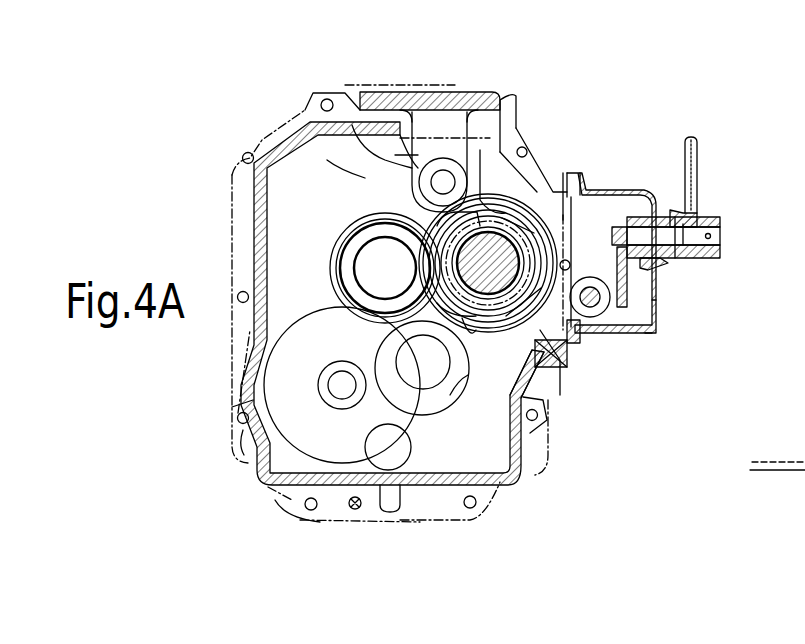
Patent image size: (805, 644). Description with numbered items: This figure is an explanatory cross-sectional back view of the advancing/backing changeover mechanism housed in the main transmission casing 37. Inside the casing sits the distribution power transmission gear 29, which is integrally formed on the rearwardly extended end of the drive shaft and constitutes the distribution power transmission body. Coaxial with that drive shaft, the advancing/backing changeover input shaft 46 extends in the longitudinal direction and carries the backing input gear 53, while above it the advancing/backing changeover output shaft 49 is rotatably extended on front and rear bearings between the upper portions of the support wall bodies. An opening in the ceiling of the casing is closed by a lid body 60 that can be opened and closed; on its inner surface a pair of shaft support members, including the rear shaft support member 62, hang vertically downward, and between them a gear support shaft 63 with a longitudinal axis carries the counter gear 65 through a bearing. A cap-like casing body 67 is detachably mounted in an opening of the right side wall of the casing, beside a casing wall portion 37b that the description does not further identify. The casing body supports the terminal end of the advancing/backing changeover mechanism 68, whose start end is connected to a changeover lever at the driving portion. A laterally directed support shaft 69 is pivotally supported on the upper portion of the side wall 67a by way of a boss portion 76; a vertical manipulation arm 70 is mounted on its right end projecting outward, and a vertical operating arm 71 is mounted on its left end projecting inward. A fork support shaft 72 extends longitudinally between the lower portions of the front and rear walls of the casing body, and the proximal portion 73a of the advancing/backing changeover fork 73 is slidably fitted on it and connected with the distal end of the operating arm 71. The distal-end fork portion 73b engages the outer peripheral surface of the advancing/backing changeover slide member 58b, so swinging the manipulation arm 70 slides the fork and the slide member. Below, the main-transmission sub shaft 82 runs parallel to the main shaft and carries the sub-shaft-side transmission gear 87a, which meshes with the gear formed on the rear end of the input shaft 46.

The main transmission casing 37 is at (447, 75).
The housing wall portion 37b is at (522, 342).
The distribution power transmission gear 29 is at (293, 322).
The advancing/backing changeover input shaft 46 is at (375, 258).
The advancing/backing changeover output shaft 49 is at (493, 272).
The backing input gear 53 is at (332, 250).
The advancing/backing changeover slide member 58b is at (505, 210).
The lid body 60 is at (443, 182).
The shaft support member 62 is at (352, 125).
The gear support shaft 63 is at (498, 140).
The counter gear 65 is at (327, 160).
The casing body 67 is at (632, 190).
The side wall 67a is at (653, 298).
The advancing/backing changeover mechanism 68 is at (712, 184).
The support shaft 69 is at (712, 236).
The manipulation arm 70 is at (693, 172).
The operating arm 71 is at (647, 337).
The fork support shaft 72 is at (593, 300).
The advancing/backing changeover fork 73 is at (545, 378).
The proximal portion 73a is at (583, 270).
The distal-end fork portion 73b is at (472, 337).
The boss portion 76 is at (663, 263).
The main-transmission sub shaft 82 is at (422, 364).
The sub-shaft-side transmission gear 87a is at (440, 330).